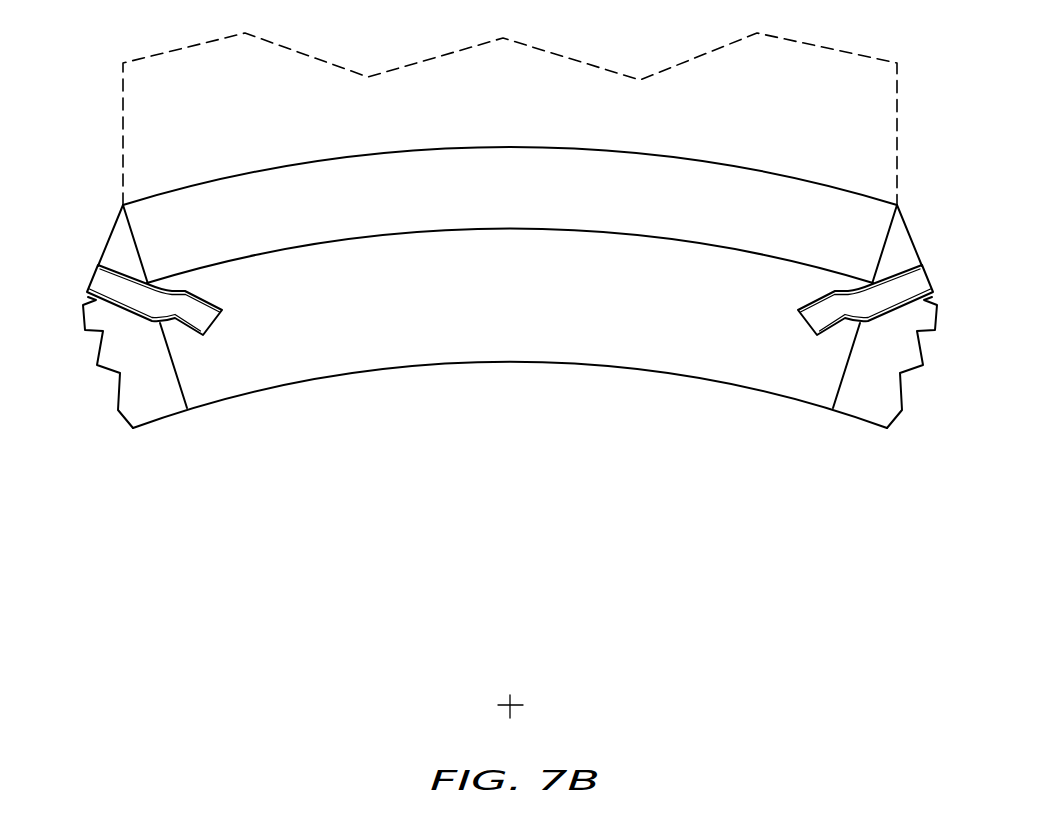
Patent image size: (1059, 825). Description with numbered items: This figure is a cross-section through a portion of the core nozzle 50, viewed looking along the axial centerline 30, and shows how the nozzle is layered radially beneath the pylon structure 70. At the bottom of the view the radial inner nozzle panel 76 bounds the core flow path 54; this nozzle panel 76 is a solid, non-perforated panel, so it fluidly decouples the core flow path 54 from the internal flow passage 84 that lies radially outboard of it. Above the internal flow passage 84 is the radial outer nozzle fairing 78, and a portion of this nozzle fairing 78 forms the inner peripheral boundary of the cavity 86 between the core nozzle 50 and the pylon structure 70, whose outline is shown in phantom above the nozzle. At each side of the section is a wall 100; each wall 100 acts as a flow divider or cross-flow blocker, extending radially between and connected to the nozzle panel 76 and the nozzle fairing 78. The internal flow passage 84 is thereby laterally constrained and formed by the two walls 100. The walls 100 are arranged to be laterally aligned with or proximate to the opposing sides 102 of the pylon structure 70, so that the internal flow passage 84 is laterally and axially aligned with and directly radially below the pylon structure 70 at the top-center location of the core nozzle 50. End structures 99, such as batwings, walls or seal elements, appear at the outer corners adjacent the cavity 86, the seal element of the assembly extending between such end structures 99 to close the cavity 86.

The axial centerline 30 is at (521, 703).
The core nozzle 50 is at (749, 250).
The core flow path 54 is at (400, 430).
The pylon structure 70 is at (660, 151).
The radial inner nozzle panel 76 is at (494, 362).
The radial outer nozzle fairing 78 is at (507, 229).
The internal flow passage 84 is at (400, 310).
The cavity 86 is at (390, 216).
The end structures 99 is at (112, 233).
The walls 100 is at (181, 383).
The opposing sides of the pylon structure 102 is at (122, 142).